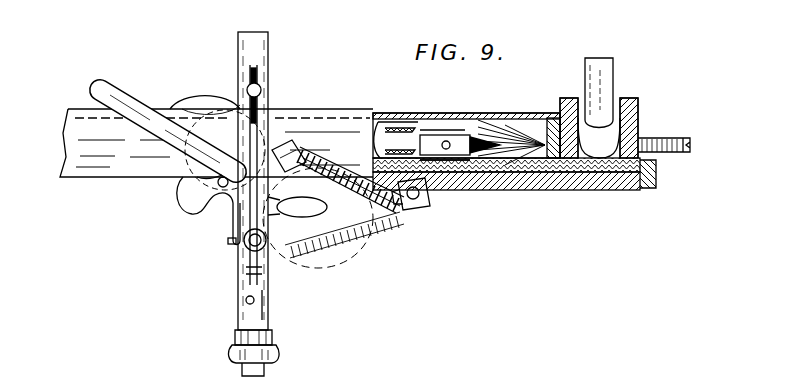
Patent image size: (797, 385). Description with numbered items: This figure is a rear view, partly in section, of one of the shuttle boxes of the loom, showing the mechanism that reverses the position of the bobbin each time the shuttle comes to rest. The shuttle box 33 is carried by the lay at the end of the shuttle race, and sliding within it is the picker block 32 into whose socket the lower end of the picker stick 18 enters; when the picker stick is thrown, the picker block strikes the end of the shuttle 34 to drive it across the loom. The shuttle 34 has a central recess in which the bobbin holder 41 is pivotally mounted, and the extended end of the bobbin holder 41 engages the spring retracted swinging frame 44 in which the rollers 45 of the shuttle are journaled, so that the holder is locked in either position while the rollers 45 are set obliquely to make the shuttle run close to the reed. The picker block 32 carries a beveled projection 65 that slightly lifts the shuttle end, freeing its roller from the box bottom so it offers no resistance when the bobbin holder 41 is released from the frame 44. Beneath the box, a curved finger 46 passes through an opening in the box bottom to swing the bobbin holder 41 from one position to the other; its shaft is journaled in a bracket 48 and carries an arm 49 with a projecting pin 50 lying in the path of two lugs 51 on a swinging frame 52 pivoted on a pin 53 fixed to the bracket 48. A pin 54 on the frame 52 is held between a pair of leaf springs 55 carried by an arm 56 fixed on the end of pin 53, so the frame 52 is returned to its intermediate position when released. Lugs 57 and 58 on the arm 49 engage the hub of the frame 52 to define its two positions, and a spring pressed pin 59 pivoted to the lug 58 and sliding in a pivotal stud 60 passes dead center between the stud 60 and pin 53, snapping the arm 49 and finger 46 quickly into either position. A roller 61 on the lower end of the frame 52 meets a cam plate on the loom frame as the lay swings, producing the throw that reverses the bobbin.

The picker stick 18 is at (612, 80).
The picker block 32 is at (640, 117).
The shuttle box 33 is at (578, 190).
The shuttle 34 is at (510, 120).
The bobbin holder 41 is at (385, 125).
The swinging frame 44 is at (437, 137).
The rollers 45 is at (450, 165).
The curved finger 46 is at (205, 95).
The bracket 48 is at (340, 225).
The arm 49 is at (128, 96).
The pin 50 is at (216, 144).
The lugs 51 is at (195, 186).
The swinging frame 52 is at (263, 296).
The pin 53 is at (244, 244).
The pin 54 is at (246, 301).
The leaf springs 55 is at (246, 274).
The arm 56 is at (262, 58).
The lug 57 is at (231, 228).
The lug 58 is at (290, 152).
The spring pressed pin 59 is at (335, 162).
The pivotal stud 60 is at (415, 208).
The roller 61 is at (275, 352).
The beveled projection 65 is at (522, 174).